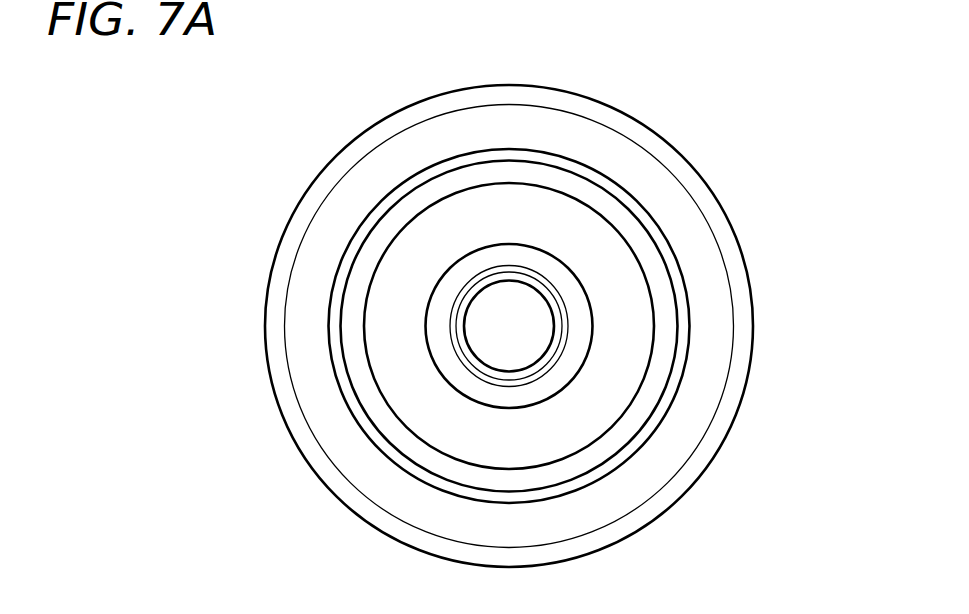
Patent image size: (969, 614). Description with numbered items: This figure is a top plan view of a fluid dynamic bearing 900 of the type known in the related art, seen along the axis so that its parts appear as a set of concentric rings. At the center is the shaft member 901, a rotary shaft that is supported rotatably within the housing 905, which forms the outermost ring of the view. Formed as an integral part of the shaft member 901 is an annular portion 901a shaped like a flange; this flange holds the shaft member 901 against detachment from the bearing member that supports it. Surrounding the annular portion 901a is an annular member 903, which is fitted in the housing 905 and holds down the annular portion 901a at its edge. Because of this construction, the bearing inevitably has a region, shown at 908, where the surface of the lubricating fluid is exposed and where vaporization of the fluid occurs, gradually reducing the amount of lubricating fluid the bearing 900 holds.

The fluid dynamic bearing 900 is at (556, 300).
The housing 905 is at (647, 138).
The annular member 903 is at (673, 213).
The exposed lubricating fluid surface portion 908 is at (650, 270).
The shaft member 901 is at (523, 393).
The annular portion 901a is at (597, 392).